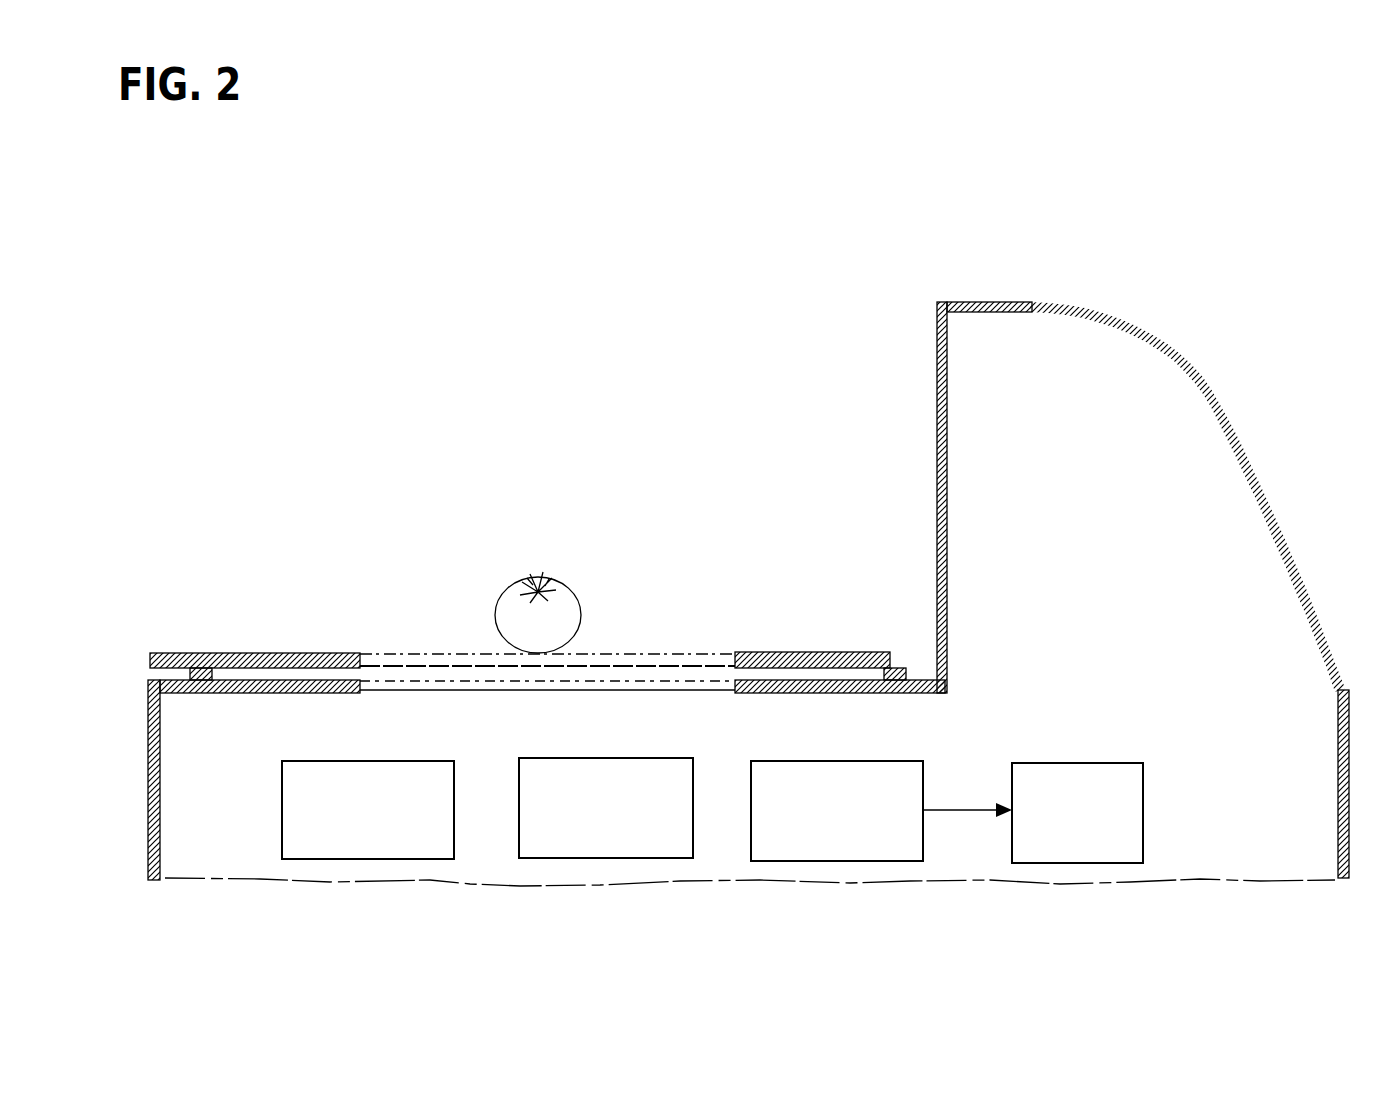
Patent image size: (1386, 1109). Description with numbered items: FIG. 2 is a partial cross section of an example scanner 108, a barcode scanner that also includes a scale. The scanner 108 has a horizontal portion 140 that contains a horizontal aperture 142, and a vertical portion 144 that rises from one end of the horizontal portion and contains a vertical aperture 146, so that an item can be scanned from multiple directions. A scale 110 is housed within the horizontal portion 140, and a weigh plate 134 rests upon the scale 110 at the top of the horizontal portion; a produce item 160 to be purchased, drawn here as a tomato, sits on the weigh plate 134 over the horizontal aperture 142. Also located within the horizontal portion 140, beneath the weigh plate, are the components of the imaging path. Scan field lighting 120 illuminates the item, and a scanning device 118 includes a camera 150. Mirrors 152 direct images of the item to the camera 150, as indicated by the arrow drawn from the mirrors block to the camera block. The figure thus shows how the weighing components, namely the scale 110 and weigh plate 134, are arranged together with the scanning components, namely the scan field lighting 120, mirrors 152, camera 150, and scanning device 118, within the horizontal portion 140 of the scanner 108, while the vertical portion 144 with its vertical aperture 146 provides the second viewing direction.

The scanner 108 is at (1152, 303).
The vertical aperture 146 is at (920, 425).
The vertical portion 144 is at (1100, 481).
The weigh plate 134 is at (237, 648).
The horizontal aperture 142 is at (403, 642).
The produce item 160 is at (572, 585).
The horizontal portion 140 is at (232, 832).
The scale 110 is at (363, 758).
The scan field lighting 120 is at (605, 757).
The mirrors 152 is at (830, 758).
The camera 150 is at (1078, 760).
The scanning device 118 is at (1165, 778).